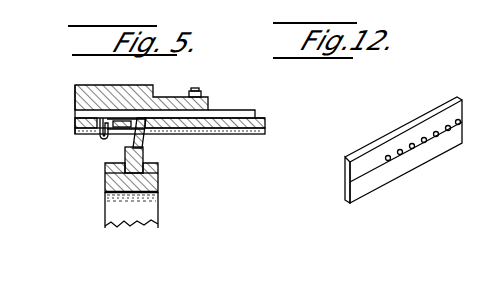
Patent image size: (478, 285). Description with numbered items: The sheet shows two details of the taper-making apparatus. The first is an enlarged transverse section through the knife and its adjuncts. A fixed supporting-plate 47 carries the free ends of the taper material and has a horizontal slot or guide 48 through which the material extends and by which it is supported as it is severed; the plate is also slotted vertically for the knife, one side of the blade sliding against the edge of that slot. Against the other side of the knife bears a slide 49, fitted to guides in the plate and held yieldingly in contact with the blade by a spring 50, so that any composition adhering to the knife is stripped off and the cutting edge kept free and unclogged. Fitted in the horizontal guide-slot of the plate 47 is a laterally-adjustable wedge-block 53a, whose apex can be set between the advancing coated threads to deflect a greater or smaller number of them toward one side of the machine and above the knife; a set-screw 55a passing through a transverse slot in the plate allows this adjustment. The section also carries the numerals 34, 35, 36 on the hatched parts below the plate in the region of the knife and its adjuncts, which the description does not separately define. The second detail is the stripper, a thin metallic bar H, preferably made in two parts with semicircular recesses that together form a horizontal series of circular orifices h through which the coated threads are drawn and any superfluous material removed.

In FIG. 5, the horizontal slot or guide 48 is at (110, 117).
In FIG. 5, the wedge-block 53a is at (250, 99).
In FIG. 5, the set-screw 55a is at (206, 87).
In FIG. 5, the supporting-plate 47 is at (203, 102).
In FIG. 5, the spring 50 is at (102, 139).
In FIG. 5, the slide 49 is at (119, 130).
In FIG. 5, the strut 34 is at (146, 142).
In FIG. 5, the block 35 is at (158, 173).
In FIG. 5, the base block 36 is at (156, 209).
In FIG. 12, the stripper bar H is at (417, 102).
In FIG. 12, the orifices h is at (415, 148).